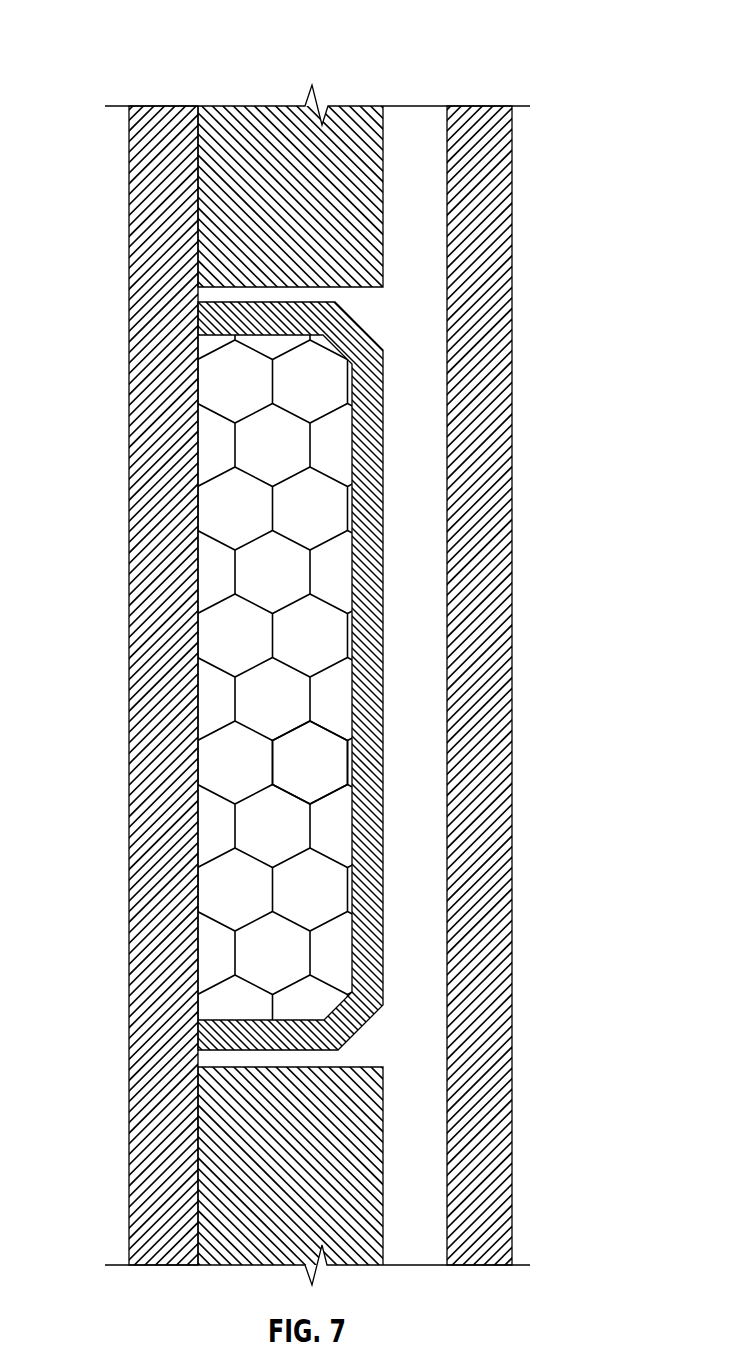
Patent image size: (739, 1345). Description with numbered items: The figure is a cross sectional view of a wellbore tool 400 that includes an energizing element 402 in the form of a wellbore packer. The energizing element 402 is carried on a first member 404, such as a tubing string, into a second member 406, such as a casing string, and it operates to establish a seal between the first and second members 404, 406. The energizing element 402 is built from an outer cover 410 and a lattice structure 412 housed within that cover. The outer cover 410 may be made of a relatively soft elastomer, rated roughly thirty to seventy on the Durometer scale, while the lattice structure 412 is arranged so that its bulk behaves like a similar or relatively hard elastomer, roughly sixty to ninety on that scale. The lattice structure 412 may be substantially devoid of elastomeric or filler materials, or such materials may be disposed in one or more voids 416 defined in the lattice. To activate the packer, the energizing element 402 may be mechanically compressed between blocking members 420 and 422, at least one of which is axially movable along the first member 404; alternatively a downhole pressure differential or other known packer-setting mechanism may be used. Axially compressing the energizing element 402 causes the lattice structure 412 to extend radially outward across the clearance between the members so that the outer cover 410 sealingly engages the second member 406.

The wellbore tool 400 is at (481, 39).
The energizing element 402 is at (432, 349).
The first member 404 is at (128, 453).
The second member 406 is at (512, 185).
The outer cover 410 is at (383, 548).
The lattice structure 412 is at (322, 670).
The voids 416 is at (340, 760).
The blocking member 420 is at (212, 205).
The blocking member 422 is at (212, 1173).